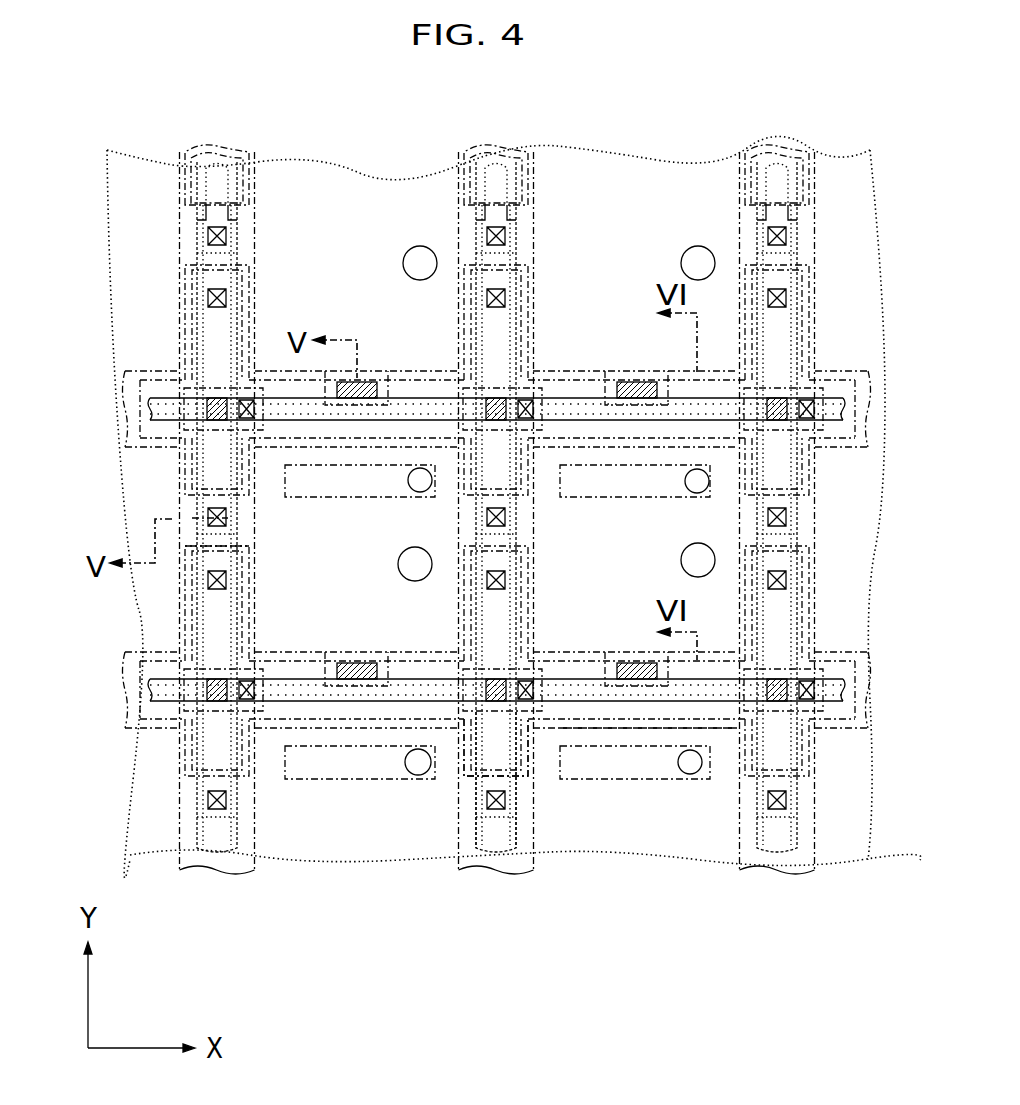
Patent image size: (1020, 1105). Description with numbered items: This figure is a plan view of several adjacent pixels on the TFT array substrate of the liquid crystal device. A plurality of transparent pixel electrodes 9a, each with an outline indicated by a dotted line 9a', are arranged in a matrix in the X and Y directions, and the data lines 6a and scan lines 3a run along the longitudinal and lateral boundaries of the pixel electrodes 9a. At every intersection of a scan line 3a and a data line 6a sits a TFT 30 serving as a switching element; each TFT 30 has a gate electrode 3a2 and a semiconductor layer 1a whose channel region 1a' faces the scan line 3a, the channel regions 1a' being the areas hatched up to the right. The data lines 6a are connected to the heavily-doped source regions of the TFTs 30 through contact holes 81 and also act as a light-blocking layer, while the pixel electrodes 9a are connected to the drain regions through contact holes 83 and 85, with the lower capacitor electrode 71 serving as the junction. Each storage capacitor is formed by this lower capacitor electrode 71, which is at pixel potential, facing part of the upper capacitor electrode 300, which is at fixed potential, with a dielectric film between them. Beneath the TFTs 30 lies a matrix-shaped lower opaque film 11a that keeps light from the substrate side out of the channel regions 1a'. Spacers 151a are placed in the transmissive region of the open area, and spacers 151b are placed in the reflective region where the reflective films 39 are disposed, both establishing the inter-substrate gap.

The semiconductor layer 1a is at (518, 780).
The channel region 1a' is at (471, 776).
The scan line 3a is at (400, 394).
The gate electrode 3a2 is at (505, 682).
The data line 6a is at (256, 600).
The pixel electrode 9a is at (526, 411).
The dotted line 9a' is at (253, 550).
The lower opaque film 11a is at (660, 722).
The TFT 30 is at (450, 724).
The reflective film 39 is at (410, 499).
The lower capacitor electrode 71 is at (620, 381).
The contact hole 81 is at (513, 517).
The contact hole 83 is at (513, 580).
The contact hole 85 is at (632, 662).
The spacer 151a is at (696, 494).
The spacer 151b is at (678, 494).
The upper capacitor electrode 300 is at (560, 372).